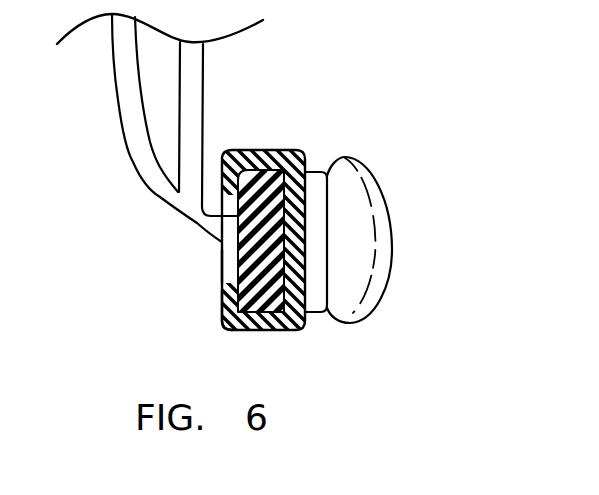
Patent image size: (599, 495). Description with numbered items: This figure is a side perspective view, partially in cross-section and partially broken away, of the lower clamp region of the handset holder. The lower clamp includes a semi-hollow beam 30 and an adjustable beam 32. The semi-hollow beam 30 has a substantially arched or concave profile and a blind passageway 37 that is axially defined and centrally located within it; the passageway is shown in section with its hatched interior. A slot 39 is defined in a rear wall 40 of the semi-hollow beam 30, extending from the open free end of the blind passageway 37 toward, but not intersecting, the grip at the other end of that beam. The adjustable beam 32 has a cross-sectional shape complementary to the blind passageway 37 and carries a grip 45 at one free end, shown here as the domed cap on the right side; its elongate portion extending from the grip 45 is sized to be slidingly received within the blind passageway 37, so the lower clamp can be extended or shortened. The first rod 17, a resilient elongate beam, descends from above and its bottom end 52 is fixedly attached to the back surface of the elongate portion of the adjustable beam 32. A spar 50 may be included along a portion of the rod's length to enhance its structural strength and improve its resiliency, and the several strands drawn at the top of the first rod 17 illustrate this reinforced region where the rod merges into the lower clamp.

The spar 50 is at (190, 63).
The first rod 17 is at (138, 150).
The semi-hollow beam 30 is at (301, 141).
The adjustable beam 32 is at (278, 308).
The blind passageway 37 is at (268, 151).
The bottom end of first rod 52 is at (227, 237).
The slot 39 is at (225, 280).
The rear wall 40 is at (223, 302).
The grip 45 is at (389, 238).